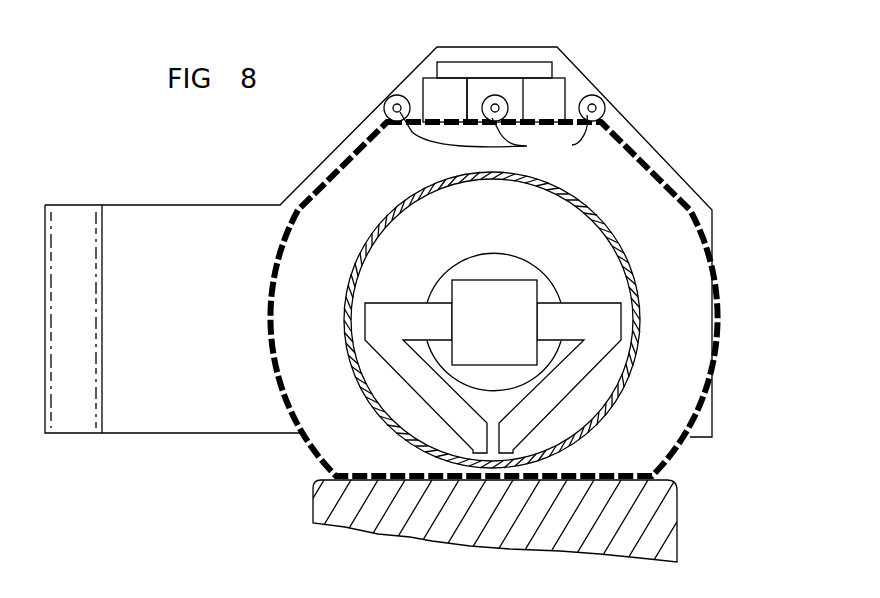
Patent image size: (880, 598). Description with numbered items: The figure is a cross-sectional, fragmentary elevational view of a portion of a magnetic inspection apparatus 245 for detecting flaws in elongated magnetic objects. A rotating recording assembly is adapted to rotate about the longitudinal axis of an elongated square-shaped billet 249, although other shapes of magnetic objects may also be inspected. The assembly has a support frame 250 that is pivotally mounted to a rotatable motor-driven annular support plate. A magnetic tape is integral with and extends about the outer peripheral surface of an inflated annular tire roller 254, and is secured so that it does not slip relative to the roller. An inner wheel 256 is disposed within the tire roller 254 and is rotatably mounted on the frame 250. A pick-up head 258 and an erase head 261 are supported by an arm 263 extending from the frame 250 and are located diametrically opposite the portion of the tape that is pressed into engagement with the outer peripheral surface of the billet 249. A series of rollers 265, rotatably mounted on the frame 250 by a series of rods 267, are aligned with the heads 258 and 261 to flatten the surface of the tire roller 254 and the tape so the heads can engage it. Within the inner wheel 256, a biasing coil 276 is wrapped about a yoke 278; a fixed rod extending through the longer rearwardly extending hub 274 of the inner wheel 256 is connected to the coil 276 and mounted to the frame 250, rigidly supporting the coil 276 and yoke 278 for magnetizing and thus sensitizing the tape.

The magnetic inspection apparatus 245 is at (204, 167).
The billet 249 is at (665, 513).
The support frame 250 is at (702, 215).
The tire roller 254 is at (660, 172).
The inner wheel 256 is at (593, 213).
The pick-up head 258 is at (558, 90).
The erase head 261 is at (433, 90).
The arm 263 is at (493, 70).
The rollers 265 is at (494, 136).
The rods 267 is at (495, 108).
The rearwardly extending hub 274 is at (495, 258).
The biasing coil 276 is at (460, 288).
The yoke 278 is at (570, 316).